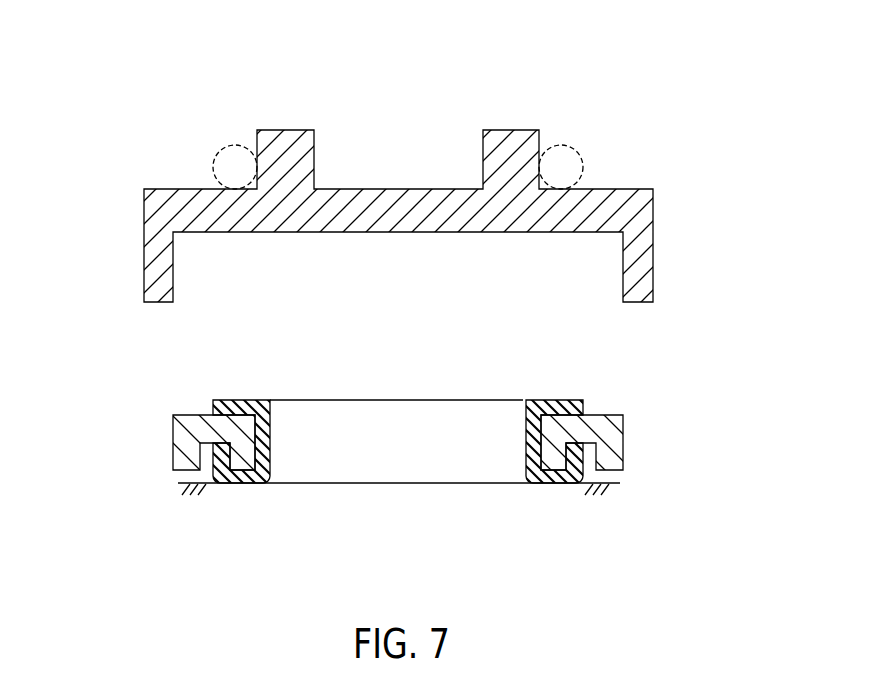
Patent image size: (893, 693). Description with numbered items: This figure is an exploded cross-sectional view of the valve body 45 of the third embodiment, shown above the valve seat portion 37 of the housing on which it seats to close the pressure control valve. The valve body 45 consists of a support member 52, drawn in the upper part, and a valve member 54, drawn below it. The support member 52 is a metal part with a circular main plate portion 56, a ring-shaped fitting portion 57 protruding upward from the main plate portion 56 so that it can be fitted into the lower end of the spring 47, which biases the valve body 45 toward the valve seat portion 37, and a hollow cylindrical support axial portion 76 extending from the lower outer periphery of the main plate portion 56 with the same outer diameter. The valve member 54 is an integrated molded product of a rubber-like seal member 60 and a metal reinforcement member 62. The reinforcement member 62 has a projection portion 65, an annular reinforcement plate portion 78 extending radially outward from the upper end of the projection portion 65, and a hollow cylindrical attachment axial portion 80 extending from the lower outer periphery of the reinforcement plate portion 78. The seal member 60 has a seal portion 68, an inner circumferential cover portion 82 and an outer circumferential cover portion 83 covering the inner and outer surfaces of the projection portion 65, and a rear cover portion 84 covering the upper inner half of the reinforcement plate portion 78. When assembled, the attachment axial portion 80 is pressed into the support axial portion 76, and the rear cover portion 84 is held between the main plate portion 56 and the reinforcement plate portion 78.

The valve seat portion 37 is at (606, 490).
The valve body 45 is at (536, 84).
The spring 47 is at (579, 146).
The support member 52 is at (658, 210).
The valve member 54 is at (644, 415).
The main plate portion 56 is at (207, 207).
The fitting portion 57 is at (285, 150).
The seal member 60 is at (546, 394).
The reinforcement member 62 is at (630, 438).
The projection portion 65 is at (242, 463).
The seal portion 68 is at (250, 478).
The support axial portion 76 is at (160, 277).
The reinforcement plate portion 78 is at (202, 425).
The attachment axial portion 80 is at (178, 453).
The inner circumferential cover portion 82 is at (267, 457).
The outer circumferential cover portion 83 is at (215, 455).
The rear cover portion 84 is at (238, 405).